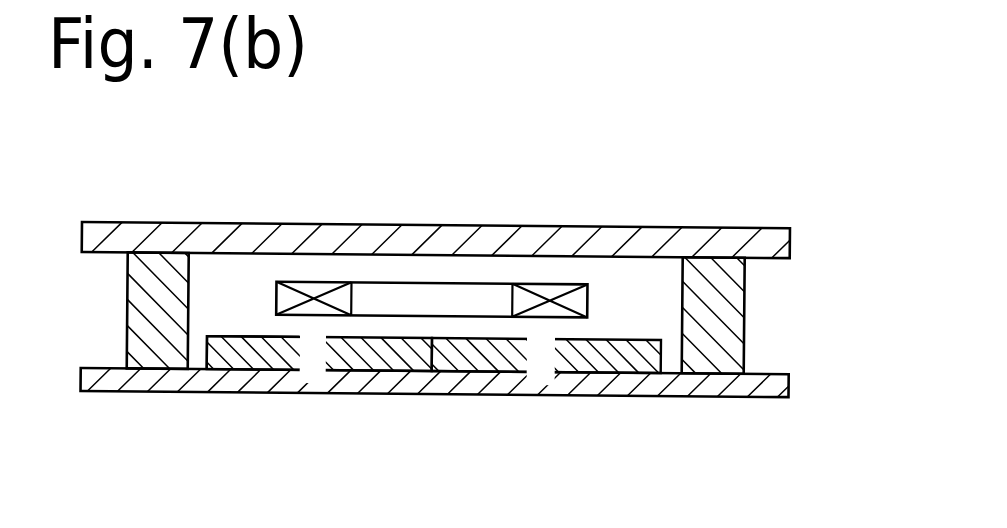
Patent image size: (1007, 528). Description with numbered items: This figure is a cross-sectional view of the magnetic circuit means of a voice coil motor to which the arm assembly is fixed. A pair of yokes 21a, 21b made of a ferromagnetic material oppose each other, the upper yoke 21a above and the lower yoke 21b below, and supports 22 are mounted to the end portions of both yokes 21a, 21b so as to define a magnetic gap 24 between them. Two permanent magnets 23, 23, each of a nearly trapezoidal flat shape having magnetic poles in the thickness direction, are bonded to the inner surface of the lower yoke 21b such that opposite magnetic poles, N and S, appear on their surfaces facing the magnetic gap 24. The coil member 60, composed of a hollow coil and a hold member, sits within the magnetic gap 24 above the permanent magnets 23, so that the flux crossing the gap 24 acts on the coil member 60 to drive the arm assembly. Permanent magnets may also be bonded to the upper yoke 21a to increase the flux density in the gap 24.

The upper yoke 21a is at (777, 229).
The lower yoke 21b is at (767, 397).
The support 22 is at (128, 303).
The permanent magnet 23 is at (363, 367).
The magnetic gap 24 is at (257, 315).
The coil member 60 is at (555, 288).